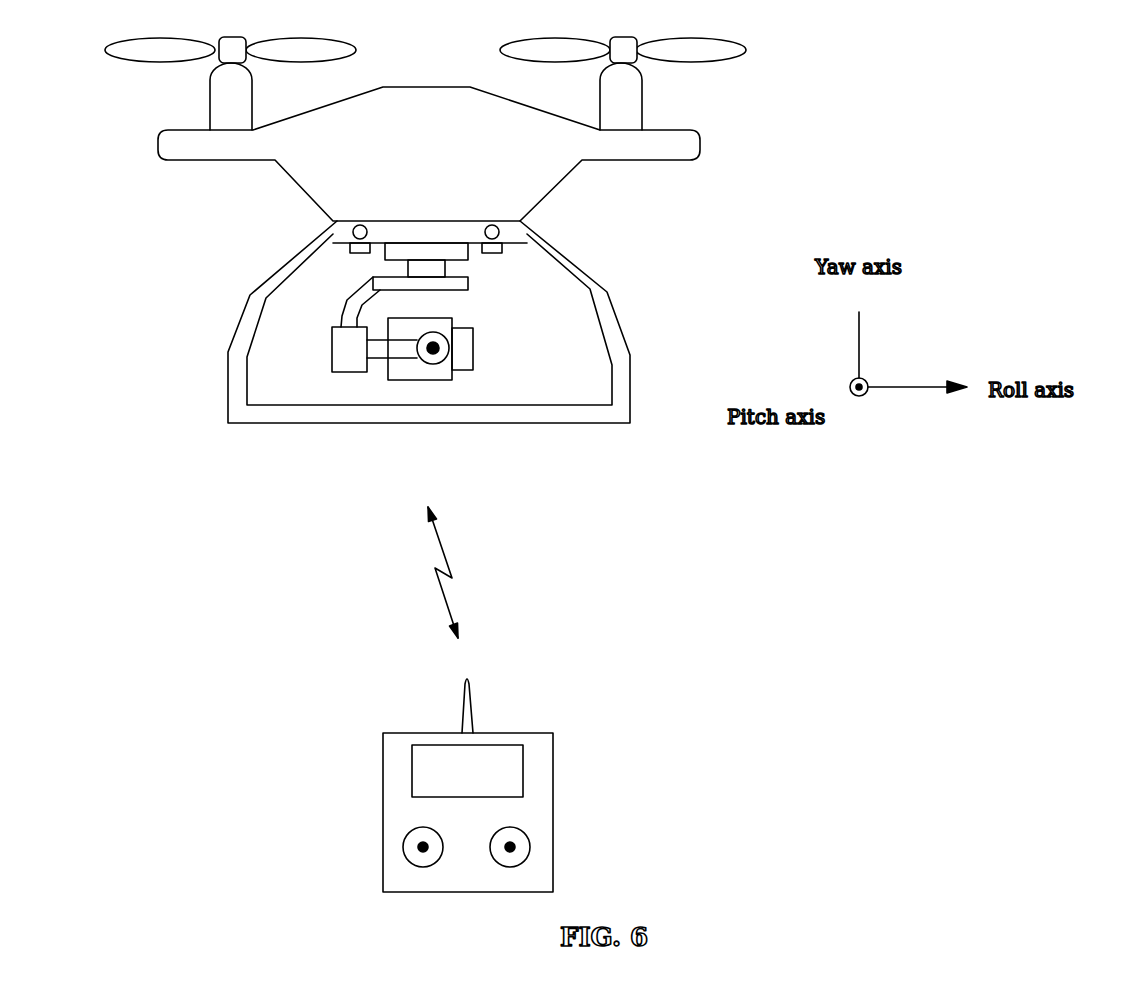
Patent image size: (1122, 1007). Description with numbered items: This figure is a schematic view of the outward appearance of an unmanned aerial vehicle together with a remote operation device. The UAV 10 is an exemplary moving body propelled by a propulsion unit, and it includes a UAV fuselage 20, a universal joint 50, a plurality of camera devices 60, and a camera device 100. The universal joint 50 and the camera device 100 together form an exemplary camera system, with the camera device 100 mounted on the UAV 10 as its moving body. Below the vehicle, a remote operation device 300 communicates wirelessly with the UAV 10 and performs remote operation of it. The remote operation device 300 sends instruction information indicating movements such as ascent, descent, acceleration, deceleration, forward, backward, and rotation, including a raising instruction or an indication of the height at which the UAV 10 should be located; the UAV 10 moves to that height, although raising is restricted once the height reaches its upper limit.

The UAV 10 is at (490, 250).
The UAV fuselage 20 is at (427, 90).
The universal joint 50 is at (343, 292).
The camera devices 60 is at (345, 250).
The camera device 100 is at (420, 370).
The remote operation device 300 is at (553, 816).